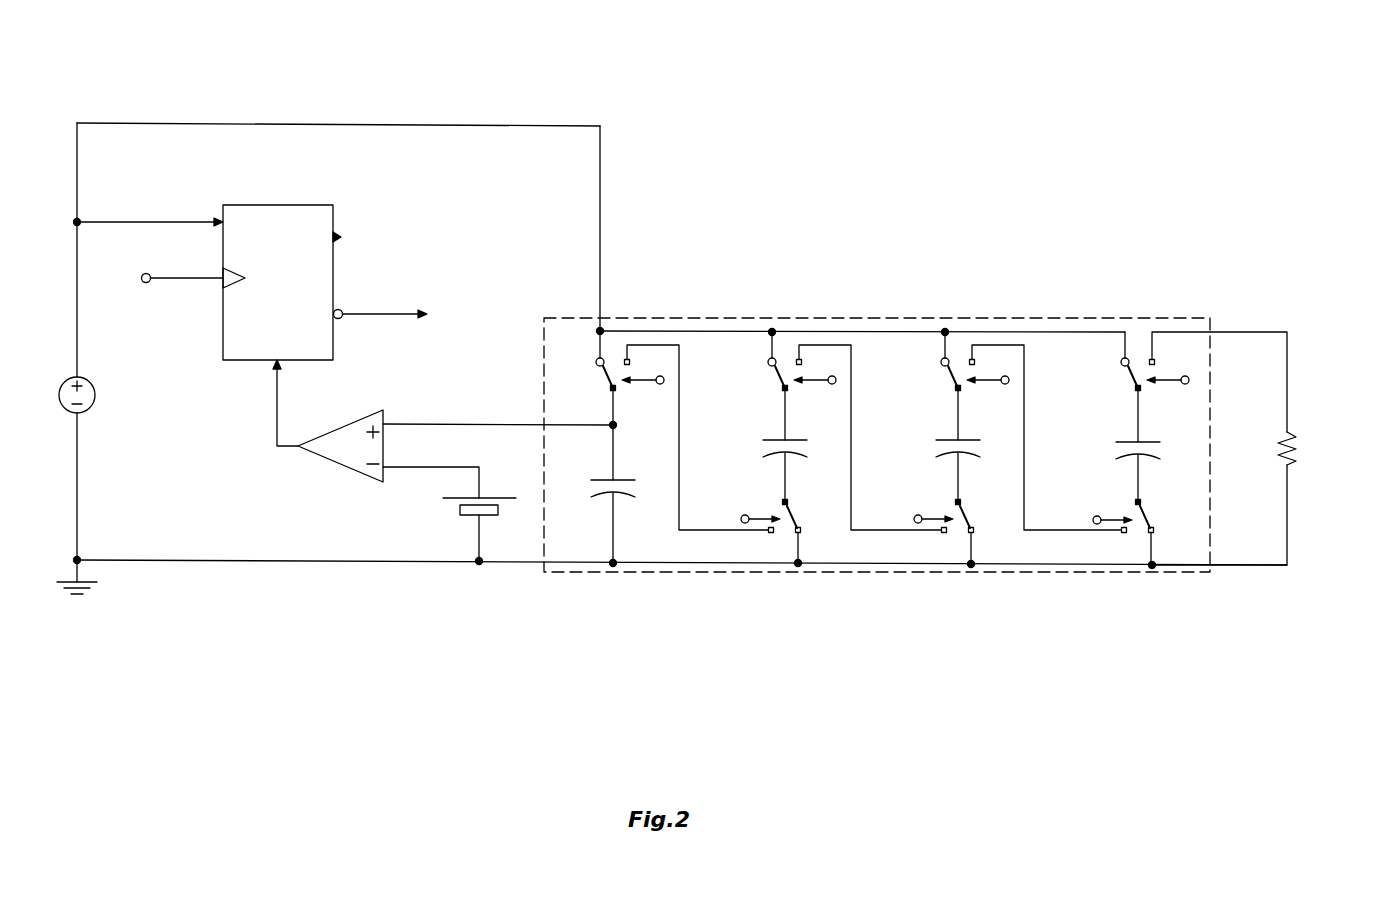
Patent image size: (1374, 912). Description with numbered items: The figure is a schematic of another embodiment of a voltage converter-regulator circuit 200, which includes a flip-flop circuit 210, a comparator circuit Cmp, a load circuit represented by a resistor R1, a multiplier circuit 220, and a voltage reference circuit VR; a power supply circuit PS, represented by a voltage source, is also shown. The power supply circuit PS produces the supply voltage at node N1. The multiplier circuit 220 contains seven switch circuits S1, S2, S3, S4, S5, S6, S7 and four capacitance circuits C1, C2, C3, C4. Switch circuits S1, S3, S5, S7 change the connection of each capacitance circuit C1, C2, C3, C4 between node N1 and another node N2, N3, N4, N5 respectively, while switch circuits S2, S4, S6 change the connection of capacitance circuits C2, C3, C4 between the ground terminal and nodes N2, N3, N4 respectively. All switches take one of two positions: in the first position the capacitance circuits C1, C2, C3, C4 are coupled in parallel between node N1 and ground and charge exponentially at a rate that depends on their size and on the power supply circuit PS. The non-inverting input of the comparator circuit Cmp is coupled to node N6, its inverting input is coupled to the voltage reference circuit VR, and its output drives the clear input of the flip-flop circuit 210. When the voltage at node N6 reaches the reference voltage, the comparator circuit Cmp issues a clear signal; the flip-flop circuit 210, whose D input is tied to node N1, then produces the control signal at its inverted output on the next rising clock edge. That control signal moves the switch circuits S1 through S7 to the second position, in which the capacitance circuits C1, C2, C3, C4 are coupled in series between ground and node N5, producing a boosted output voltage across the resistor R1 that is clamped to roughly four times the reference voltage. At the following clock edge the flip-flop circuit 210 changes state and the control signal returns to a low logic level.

The voltage converter-regulator circuit 200 is at (1214, 178).
The flip-flop circuit 210 is at (283, 187).
The multiplier circuit 220 is at (674, 312).
The node N1 is at (420, 139).
The node N2 is at (688, 468).
The node N3 is at (860, 468).
The node N4 is at (1033, 468).
The node N5 is at (1243, 345).
The node N6 is at (444, 419).
The switch circuit S1 is at (601, 375).
The switch circuit S2 is at (794, 513).
The switch circuit S3 is at (773, 375).
The switch circuit S4 is at (967, 513).
The switch circuit S5 is at (946, 375).
The switch circuit S6 is at (1147, 516).
The switch circuit S7 is at (1126, 377).
The capacitance circuit C1 is at (591, 477).
The capacitance circuit C2 is at (763, 437).
The capacitance circuit C3 is at (936, 437).
The capacitance circuit C4 is at (1116, 439).
The resistor R1 is at (1280, 440).
The power supply circuit PS is at (91, 373).
The voltage reference circuit VR is at (452, 514).
The comparator circuit Cmp is at (358, 405).